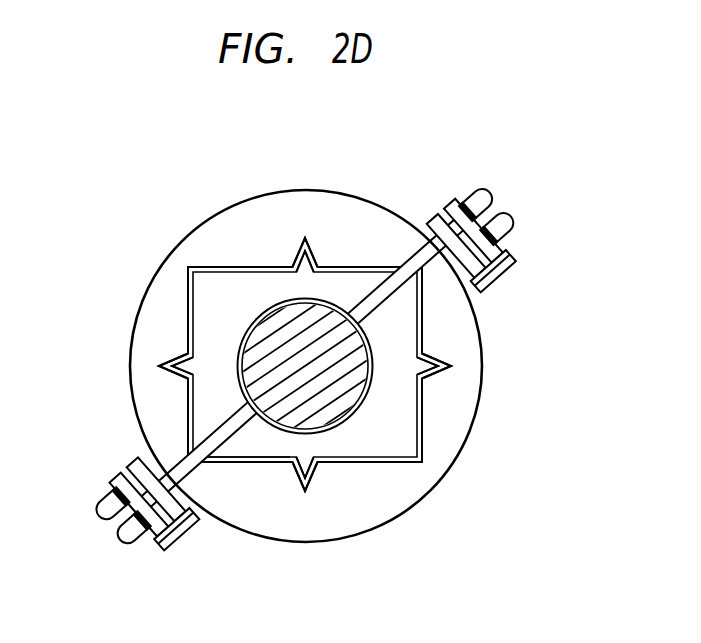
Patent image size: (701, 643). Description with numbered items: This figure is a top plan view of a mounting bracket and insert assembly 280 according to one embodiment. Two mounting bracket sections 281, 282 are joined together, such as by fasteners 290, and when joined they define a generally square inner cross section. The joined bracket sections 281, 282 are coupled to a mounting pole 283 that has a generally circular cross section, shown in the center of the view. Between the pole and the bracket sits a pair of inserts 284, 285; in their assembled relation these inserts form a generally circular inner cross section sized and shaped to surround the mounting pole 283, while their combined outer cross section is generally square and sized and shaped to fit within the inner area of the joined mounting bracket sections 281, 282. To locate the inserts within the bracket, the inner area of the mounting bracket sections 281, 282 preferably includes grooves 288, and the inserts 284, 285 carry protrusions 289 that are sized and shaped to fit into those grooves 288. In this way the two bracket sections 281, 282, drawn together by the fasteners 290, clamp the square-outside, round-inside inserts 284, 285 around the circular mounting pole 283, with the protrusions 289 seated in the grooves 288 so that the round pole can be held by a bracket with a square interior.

The electrode assembly 280 is at (336, 372).
The mounting bracket section 281 is at (358, 216).
The mounting bracket section 282 is at (441, 456).
The mounting pole 283 is at (374, 336).
The insert 284 is at (200, 330).
The insert 285 is at (255, 448).
The grooves 288 is at (306, 237).
The protrusions 289 is at (293, 267).
The fasteners 290 is at (507, 278).